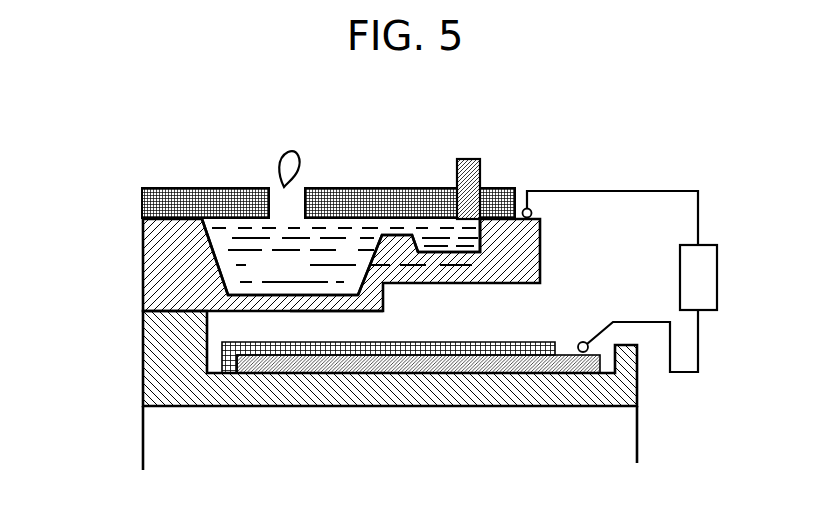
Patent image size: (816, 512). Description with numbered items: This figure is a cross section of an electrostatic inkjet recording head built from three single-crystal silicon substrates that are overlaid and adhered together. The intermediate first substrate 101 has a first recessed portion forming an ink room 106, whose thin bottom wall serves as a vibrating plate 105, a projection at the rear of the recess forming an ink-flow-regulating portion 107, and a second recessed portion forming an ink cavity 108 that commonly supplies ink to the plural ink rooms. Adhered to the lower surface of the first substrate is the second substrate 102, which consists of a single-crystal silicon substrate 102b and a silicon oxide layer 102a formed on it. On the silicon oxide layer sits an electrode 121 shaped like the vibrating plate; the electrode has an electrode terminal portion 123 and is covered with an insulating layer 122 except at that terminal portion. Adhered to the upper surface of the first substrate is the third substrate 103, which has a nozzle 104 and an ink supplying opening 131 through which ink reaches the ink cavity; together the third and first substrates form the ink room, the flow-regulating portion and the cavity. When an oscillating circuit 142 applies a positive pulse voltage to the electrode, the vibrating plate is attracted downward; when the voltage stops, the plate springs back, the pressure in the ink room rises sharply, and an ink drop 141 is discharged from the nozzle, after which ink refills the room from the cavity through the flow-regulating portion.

The first substrate 101 is at (160, 258).
The second substrate 102 is at (326, 390).
The silicon oxide layer 102a is at (158, 358).
The single-crystal silicon substrate 102b is at (354, 438).
The third substrate 103 is at (157, 207).
The nozzle 104 is at (278, 197).
The vibrating plate 105 is at (330, 311).
The ink room 106 is at (232, 228).
The ink-flow-regulating portion 107 is at (395, 230).
The ink cavity 108 is at (438, 230).
The electrode 121 is at (282, 367).
The insulating layer 122 is at (503, 344).
The electrode terminal portion 123 is at (582, 365).
The ink supplying opening 131 is at (483, 201).
The ink drop 141 is at (298, 151).
The oscillating circuit 142 is at (717, 268).